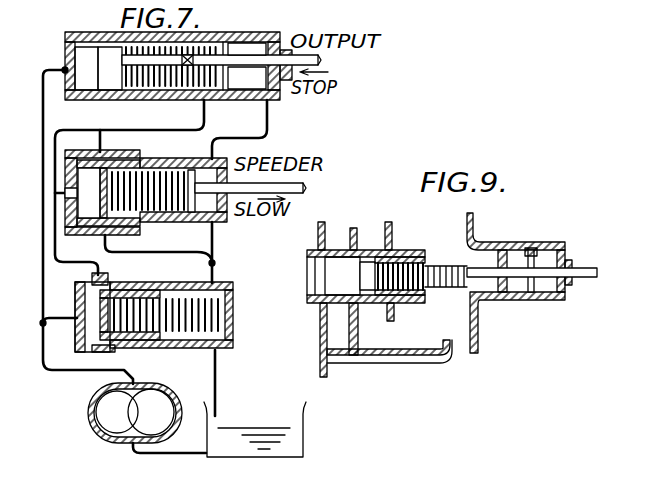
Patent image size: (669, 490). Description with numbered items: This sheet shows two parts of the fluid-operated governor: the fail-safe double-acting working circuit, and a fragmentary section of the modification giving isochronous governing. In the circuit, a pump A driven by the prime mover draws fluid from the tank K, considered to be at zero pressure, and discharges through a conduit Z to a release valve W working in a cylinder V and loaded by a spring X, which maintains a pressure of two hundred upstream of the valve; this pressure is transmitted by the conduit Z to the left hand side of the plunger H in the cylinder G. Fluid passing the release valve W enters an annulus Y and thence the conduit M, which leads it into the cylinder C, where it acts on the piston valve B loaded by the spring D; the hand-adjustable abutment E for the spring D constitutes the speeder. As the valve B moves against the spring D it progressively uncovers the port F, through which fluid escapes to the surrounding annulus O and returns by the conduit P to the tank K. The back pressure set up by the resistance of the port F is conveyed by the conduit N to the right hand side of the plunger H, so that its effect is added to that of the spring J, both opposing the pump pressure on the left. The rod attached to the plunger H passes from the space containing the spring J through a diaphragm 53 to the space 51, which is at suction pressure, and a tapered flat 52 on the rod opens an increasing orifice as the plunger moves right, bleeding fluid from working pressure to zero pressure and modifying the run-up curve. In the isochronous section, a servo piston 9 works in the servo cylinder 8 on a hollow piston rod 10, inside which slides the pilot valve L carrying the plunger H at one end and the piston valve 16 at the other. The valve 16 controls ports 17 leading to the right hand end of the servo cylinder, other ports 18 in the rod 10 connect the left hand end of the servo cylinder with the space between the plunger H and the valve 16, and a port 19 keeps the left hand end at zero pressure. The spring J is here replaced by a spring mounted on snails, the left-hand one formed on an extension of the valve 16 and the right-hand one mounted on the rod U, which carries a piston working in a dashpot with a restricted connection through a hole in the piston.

In FIG. 7, the cylinder G is at (86, 68).
In FIG. 7, the plunger H is at (110, 68).
In FIG. 9, the plunger H is at (320, 272).
In FIG. 7, the conduit N is at (129, 186).
In FIG. 7, the port F is at (92, 141).
In FIG. 7, the conduit P is at (239, 129).
In FIG. 7, the conduit M is at (140, 252).
In FIG. 7, the tapered flat 52 is at (221, 89).
In FIG. 7, the space 51 is at (247, 49).
In FIG. 7, the diaphragm 53 is at (214, 62).
In FIG. 7, the cylinder C is at (146, 192).
In FIG. 7, the abutment E is at (250, 184).
In FIG. 7, the annulus O is at (133, 160).
In FIG. 7, the piston valve B is at (130, 178).
In FIG. 7, the spring D is at (140, 186).
In FIG. 7, the cylinder V is at (92, 317).
In FIG. 9, the cylinder V is at (535, 285).
In FIG. 7, the annulus Y is at (104, 280).
In FIG. 7, the spring X is at (194, 312).
In FIG. 9, the spring X is at (527, 250).
In FIG. 7, the release valve W is at (118, 342).
In FIG. 9, the release valve W is at (546, 256).
In FIG. 7, the conduit Z is at (61, 358).
In FIG. 7, the pump A is at (135, 413).
In FIG. 7, the tank K is at (255, 429).
In FIG. 9, the servo piston 9 is at (331, 235).
In FIG. 9, the servo cylinder 8 is at (362, 234).
In FIG. 9, the pilot valve L is at (333, 276).
In FIG. 9, the spring J is at (392, 255).
In FIG. 9, the hollow piston rod 10 is at (392, 302).
In FIG. 9, the ports 18 is at (340, 305).
In FIG. 9, the ports 17 is at (366, 303).
In FIG. 9, the port 19 is at (344, 342).
In FIG. 9, the piston valve 16 is at (400, 302).
In FIG. 9, the rod U is at (493, 272).